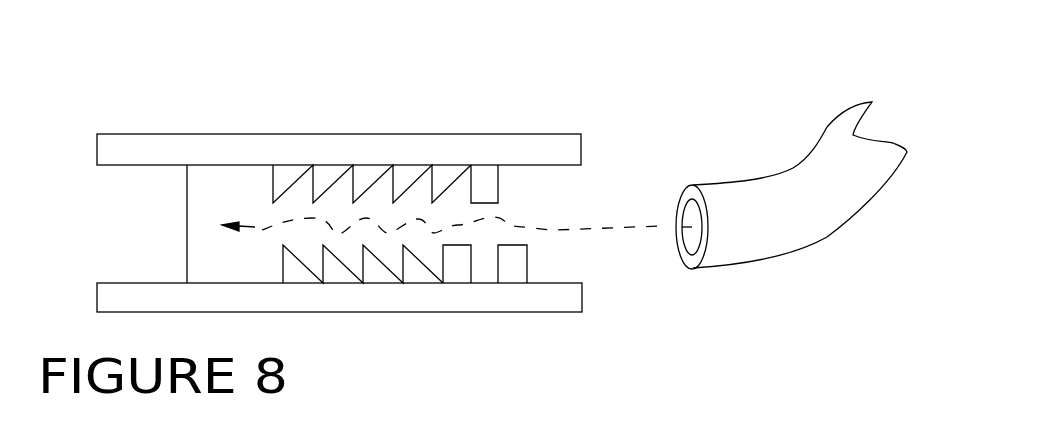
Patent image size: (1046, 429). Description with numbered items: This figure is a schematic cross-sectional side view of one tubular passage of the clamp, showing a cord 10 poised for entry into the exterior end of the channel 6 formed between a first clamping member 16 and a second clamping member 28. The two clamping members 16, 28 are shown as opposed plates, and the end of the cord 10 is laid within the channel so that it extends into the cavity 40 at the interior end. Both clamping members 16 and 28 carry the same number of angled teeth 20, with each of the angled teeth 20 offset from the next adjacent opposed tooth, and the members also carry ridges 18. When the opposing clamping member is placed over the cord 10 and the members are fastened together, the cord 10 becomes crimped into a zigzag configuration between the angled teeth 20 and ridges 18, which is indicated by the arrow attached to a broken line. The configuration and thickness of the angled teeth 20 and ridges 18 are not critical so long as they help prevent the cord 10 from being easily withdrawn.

The channel 6 is at (489, 284).
The cord 10 is at (813, 180).
The first clamping member 16 is at (127, 148).
The ridges 18 is at (458, 257).
The angled teeth 20 is at (323, 185).
The second clamping member 28 is at (538, 298).
The cavity 40 is at (212, 188).